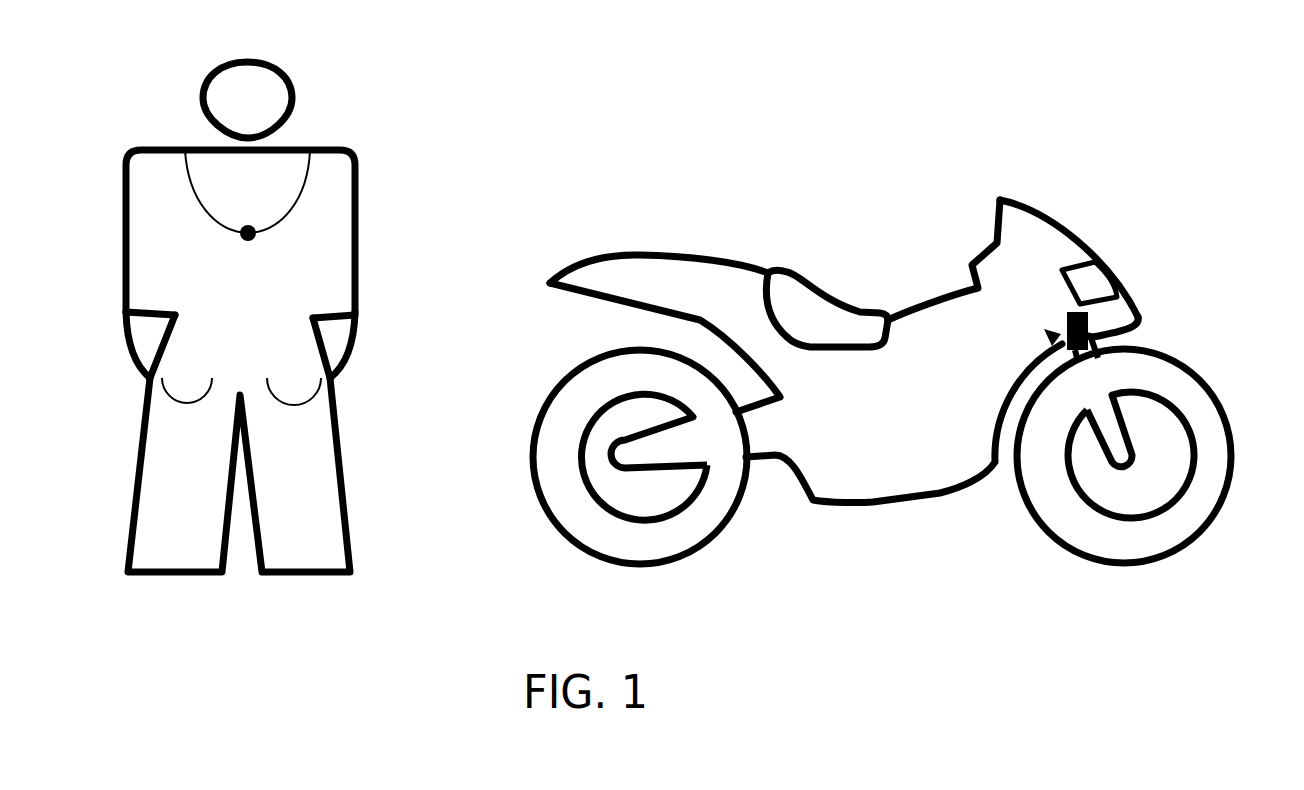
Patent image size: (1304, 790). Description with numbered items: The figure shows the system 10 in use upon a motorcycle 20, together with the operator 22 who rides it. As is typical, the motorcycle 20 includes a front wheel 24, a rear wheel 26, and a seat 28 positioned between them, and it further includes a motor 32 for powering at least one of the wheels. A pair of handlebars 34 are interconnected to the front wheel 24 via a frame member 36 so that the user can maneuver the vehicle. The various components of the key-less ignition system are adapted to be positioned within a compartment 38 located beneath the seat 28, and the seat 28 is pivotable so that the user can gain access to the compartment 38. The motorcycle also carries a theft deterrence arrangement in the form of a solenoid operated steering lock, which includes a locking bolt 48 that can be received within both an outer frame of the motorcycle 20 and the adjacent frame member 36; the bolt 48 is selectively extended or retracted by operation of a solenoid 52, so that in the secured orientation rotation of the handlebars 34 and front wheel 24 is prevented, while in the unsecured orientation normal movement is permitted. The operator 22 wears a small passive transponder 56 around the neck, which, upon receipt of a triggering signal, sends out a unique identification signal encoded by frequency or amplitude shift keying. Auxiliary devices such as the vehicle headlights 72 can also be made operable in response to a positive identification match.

The system 10 is at (1150, 160).
The motorcycle 20 is at (653, 255).
The operator 22 is at (330, 146).
The front wheel 24 is at (1200, 540).
The rear wheel 26 is at (598, 556).
The seat 28 is at (778, 267).
The motor 32 is at (957, 483).
The handlebars 34 is at (982, 250).
The frame member 36 is at (1123, 407).
The compartment 38 is at (777, 342).
The locking bolt 48 is at (1120, 328).
The solenoid 52 is at (1078, 307).
The transponder 56 is at (258, 231).
The vehicle headlights 72 is at (1103, 278).